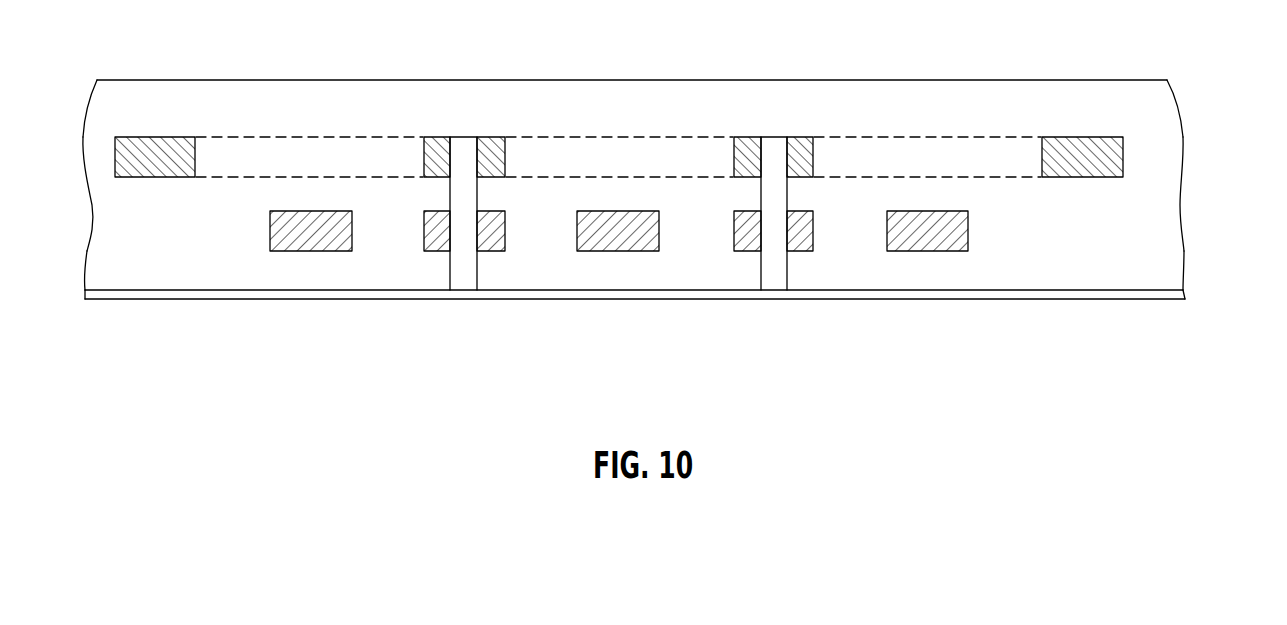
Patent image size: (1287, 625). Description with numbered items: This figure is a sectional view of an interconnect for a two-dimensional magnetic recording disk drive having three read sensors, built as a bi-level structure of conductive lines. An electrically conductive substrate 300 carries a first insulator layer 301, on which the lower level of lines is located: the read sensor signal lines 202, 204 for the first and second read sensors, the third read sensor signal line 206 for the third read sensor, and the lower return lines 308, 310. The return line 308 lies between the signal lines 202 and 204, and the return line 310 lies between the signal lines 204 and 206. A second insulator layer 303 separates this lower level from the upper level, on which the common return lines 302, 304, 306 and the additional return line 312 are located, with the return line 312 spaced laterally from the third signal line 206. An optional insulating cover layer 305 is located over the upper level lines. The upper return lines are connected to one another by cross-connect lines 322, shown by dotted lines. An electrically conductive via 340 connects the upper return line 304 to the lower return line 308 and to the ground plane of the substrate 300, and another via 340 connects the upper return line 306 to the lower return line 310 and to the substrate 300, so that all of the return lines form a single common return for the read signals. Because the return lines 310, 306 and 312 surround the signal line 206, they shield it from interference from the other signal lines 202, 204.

The electrically conductive substrate 300 is at (1185, 299).
The first insulator layer 301 is at (1157, 283).
The second insulator layer 303 is at (1157, 198).
The cover layer 305 is at (1157, 107).
The common return line 302 is at (152, 137).
The common return line 304 is at (437, 137).
The common return line 306 is at (748, 137).
The additional return line 312 is at (1078, 137).
The common return line 308 is at (440, 251).
The additional return line 310 is at (752, 251).
The cross-connect line 322 is at (253, 155).
The electrically conductive via 340 is at (463, 137).
The read sensor signal line 202 is at (270, 228).
The read sensor signal line 204 is at (585, 251).
The third read sensor signal line 206 is at (968, 232).